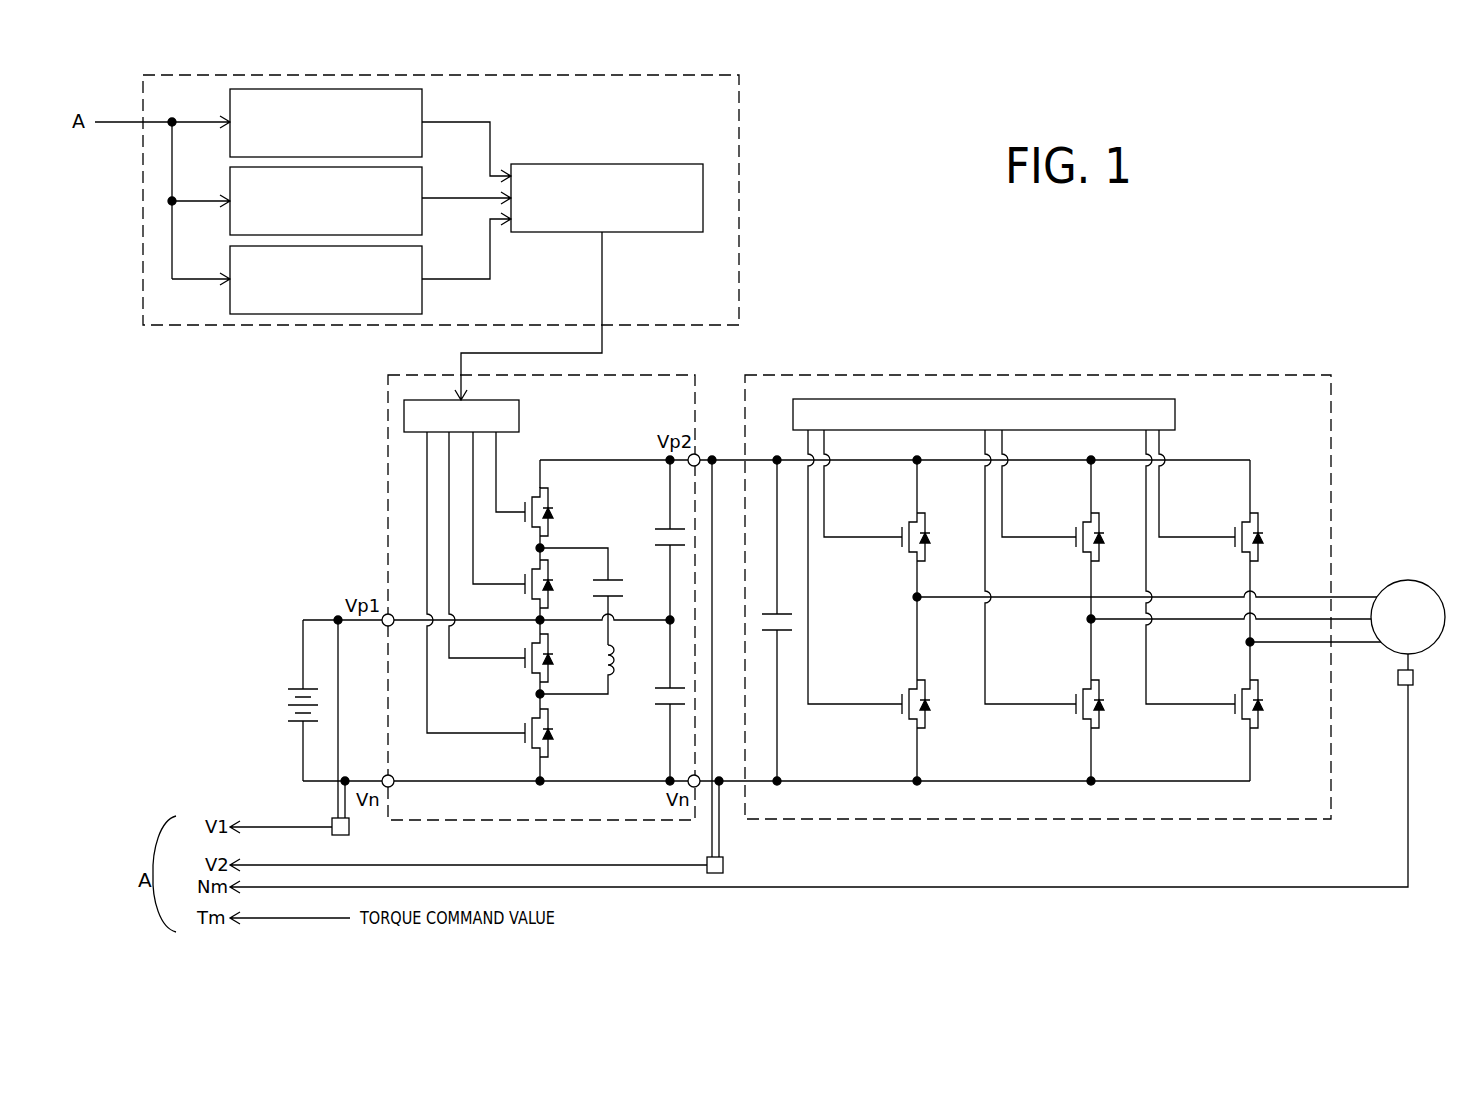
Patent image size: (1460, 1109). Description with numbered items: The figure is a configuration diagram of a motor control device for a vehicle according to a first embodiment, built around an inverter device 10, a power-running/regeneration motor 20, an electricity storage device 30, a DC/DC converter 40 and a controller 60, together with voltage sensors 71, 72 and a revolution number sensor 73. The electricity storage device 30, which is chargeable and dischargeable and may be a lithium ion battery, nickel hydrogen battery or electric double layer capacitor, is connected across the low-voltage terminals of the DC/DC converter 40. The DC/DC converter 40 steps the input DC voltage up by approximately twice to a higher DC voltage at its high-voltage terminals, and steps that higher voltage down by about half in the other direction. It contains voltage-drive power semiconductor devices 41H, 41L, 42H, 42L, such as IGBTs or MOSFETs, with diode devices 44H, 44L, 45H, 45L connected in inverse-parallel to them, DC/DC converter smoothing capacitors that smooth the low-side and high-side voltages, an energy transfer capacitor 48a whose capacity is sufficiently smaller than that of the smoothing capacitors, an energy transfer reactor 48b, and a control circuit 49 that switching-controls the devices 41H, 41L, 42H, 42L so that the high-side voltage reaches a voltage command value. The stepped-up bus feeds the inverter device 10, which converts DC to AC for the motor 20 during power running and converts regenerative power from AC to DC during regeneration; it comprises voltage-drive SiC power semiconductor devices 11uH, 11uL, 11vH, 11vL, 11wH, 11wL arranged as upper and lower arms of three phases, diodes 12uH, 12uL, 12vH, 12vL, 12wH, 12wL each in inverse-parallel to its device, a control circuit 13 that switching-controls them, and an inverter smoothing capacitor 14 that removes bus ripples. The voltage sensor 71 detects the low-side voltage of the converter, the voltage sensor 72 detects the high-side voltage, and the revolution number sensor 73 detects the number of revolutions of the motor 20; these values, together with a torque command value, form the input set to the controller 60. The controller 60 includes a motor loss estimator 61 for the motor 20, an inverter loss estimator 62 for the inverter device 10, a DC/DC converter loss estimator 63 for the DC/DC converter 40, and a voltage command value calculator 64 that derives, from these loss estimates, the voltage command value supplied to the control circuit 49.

The inverter device 10 is at (1278, 375).
The control circuit 13 is at (1175, 420).
The inverter smoothing capacitor 14 is at (768, 610).
The power semiconductor device 11uH is at (898, 519).
The diode 12uH is at (933, 519).
The power semiconductor device 11vH is at (1072, 519).
The diode 12vH is at (1107, 519).
The power semiconductor device 11wH is at (1231, 519).
The diode 12wH is at (1266, 519).
The power semiconductor device 11uL is at (898, 688).
The diode 12uL is at (933, 691).
The power semiconductor device 11vL is at (1072, 688).
The diode 12vL is at (1107, 691).
The power semiconductor device 11wL is at (1231, 688).
The diode 12wL is at (1266, 691).
The power-running/regeneration motor 20 is at (1385, 583).
The electricity storage device 30 is at (286, 697).
The DC/DC converter 40 is at (678, 375).
The control circuit 49 is at (519, 425).
The power semiconductor device 41H is at (521, 661).
The power semiconductor device 41L is at (521, 736).
The power semiconductor device 42H is at (526, 506).
The power semiconductor device 42L is at (526, 578).
The diode device 44H is at (556, 661).
The diode device 44L is at (556, 738).
The diode device 45H is at (551, 506).
The diode device 45L is at (553, 590).
The energy transfer capacitor 48a is at (614, 588).
The energy transfer reactor 48b is at (650, 686).
The controller 60 is at (740, 90).
The motor loss estimator 61 is at (423, 146).
The inverter loss estimator 62 is at (423, 222).
The DC/DC converter loss estimator 63 is at (423, 298).
The voltage command value calculator 64 is at (688, 164).
The voltage sensor 71 is at (349, 830).
The voltage sensor 72 is at (723, 866).
The revolution number sensor 73 is at (1398, 677).